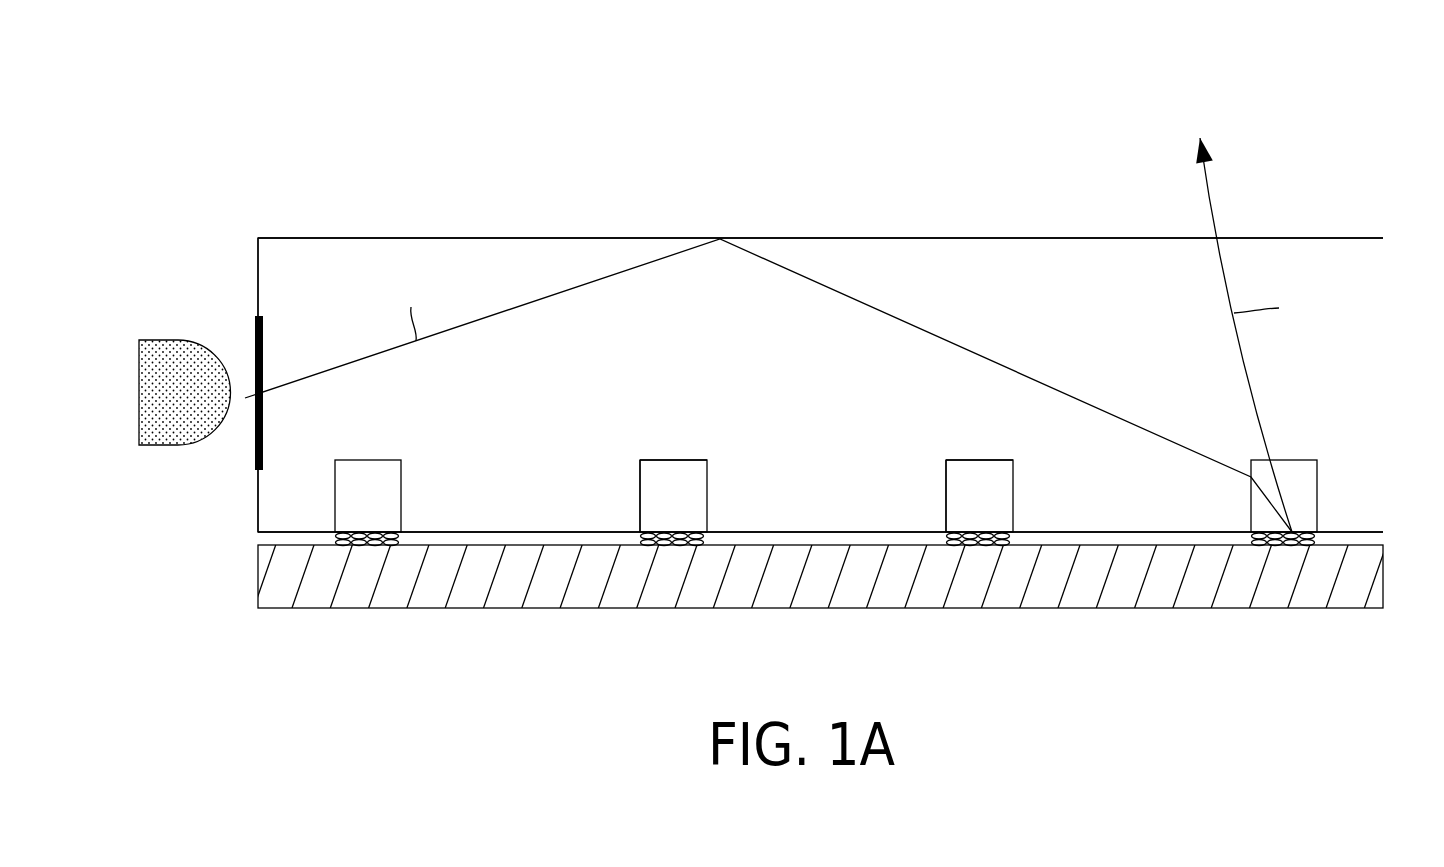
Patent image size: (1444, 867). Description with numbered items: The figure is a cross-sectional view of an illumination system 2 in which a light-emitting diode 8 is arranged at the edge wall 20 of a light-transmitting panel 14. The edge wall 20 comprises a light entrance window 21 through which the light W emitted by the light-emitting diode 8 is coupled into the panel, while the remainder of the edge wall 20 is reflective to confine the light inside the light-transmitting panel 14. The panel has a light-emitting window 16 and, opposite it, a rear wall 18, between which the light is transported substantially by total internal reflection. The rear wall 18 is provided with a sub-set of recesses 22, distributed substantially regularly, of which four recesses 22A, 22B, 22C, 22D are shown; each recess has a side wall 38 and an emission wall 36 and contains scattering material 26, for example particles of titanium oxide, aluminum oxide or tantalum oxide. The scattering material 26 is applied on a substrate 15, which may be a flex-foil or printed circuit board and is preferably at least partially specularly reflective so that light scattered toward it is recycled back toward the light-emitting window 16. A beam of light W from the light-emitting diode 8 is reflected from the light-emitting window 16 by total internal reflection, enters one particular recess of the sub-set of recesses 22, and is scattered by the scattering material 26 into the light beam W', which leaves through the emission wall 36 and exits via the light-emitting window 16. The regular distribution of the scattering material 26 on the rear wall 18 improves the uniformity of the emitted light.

The illumination system 2 is at (797, 115).
The light-emitting diode 8 is at (170, 446).
The light-transmitting panel 14 is at (459, 255).
The substrate 15 is at (490, 608).
The light-emitting window 16 is at (315, 243).
The rear wall 18 is at (481, 531).
The edge wall 20 is at (261, 264).
The light entrance window 21 is at (255, 320).
The sub-set of recesses 22 is at (873, 472).
The recess 22A is at (370, 470).
The recess 22B is at (667, 470).
The recess 22C is at (971, 470).
The recess 22D is at (1297, 470).
The scattering material 26 is at (362, 531).
The emission wall 36 is at (691, 462).
The side wall 38 is at (640, 472).